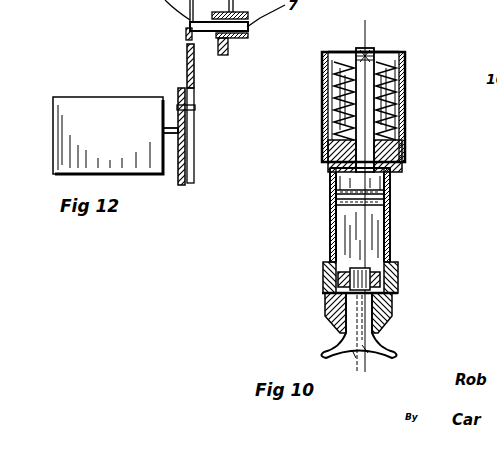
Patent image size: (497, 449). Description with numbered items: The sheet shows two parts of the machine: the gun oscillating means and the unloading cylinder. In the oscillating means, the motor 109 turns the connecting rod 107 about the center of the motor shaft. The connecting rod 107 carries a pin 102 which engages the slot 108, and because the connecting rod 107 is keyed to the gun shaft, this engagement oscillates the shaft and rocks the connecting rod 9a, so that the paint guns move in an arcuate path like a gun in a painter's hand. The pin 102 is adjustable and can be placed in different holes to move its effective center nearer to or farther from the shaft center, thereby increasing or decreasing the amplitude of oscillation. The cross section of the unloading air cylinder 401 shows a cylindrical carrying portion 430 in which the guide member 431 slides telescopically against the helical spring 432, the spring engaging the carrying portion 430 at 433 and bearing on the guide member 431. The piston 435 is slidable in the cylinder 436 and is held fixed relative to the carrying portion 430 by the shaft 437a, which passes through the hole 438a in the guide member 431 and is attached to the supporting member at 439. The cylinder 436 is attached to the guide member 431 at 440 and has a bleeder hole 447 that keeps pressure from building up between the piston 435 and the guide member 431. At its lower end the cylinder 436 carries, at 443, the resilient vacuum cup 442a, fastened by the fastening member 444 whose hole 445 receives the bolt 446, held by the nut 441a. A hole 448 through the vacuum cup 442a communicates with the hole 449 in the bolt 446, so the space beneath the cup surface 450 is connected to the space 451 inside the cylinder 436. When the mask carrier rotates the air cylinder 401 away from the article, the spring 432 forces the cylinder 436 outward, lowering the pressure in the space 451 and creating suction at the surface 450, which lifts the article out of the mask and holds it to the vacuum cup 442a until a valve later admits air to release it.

In FIG. 12, the motor 109 is at (64, 96).
In FIG. 12, the connecting rod 107 is at (180, 188).
In FIG. 12, the connecting rod 9a is at (194, 78).
In FIG. 12, the pin 102 is at (195, 108).
In FIG. 12, the slot 108 is at (188, 134).
In FIG. 10, the cylindrical carrying portion 430 is at (403, 118).
In FIG. 10, the guide member 431 is at (400, 140).
In FIG. 10, the helical spring 432 is at (382, 84).
In FIG. 10, the spring engagement point on carrying portion 433 is at (385, 50).
In FIG. 10, the piston 435 is at (385, 196).
In FIG. 10, the cylinder 436 is at (392, 232).
In FIG. 10, the shaft 437a is at (378, 112).
In FIG. 10, the hole 438a is at (346, 142).
In FIG. 10, the attachment point to supporting member 439 is at (356, 52).
In FIG. 10, the attachment point of cylinder 440 is at (402, 158).
In FIG. 10, the nut 441a is at (396, 270).
In FIG. 10, the resilient vacuum cup 442a is at (432, 338).
In FIG. 10, the attachment point of vacuum cup 443 is at (323, 263).
In FIG. 10, the fastening member 444 is at (393, 300).
In FIG. 10, the hole 445 is at (382, 292).
In FIG. 10, the bolt 446 is at (330, 310).
In FIG. 10, the bleeder hole 447 is at (330, 180).
In FIG. 10, the hole 448 is at (352, 340).
In FIG. 10, the hole 449 is at (350, 297).
In FIG. 10, the surface 450 is at (365, 340).
In FIG. 10, the space 451 is at (358, 228).
In FIG. 10, the air cylinder 401 is at (336, 206).